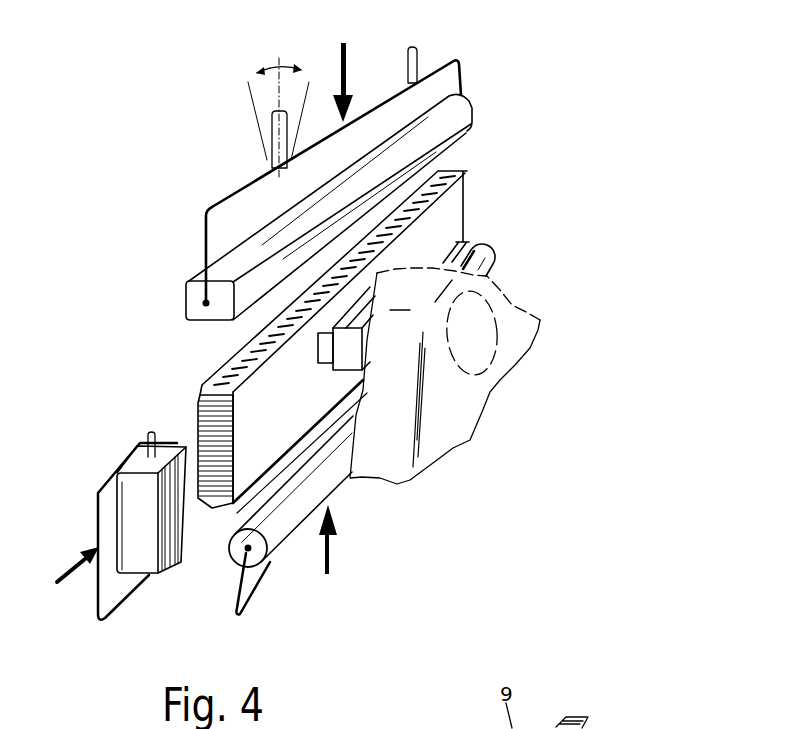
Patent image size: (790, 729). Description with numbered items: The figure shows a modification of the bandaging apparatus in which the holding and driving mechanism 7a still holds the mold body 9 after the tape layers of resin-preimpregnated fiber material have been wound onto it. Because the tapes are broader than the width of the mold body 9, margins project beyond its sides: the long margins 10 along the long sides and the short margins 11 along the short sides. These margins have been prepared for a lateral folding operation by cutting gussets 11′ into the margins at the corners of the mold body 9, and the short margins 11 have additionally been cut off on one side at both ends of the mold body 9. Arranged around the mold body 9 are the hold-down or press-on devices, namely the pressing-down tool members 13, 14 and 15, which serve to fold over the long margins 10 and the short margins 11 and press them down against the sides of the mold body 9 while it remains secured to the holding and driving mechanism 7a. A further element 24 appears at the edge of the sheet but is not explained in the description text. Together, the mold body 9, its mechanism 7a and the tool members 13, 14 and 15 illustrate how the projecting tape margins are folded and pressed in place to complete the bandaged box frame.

The pressing-down tool member 14 is at (252, 248).
The long margin 10 is at (449, 190).
The mold body 9 is at (305, 400).
The short margin 11 is at (204, 443).
The gusset 11′ is at (201, 393).
The pressing-down tool member 15 is at (482, 248).
The holding and driving mechanism 7a is at (447, 395).
The pressing-down tool member 13 is at (140, 507).
The element 24 is at (596, 728).